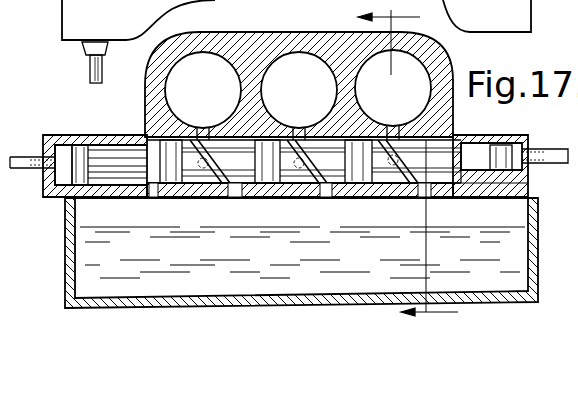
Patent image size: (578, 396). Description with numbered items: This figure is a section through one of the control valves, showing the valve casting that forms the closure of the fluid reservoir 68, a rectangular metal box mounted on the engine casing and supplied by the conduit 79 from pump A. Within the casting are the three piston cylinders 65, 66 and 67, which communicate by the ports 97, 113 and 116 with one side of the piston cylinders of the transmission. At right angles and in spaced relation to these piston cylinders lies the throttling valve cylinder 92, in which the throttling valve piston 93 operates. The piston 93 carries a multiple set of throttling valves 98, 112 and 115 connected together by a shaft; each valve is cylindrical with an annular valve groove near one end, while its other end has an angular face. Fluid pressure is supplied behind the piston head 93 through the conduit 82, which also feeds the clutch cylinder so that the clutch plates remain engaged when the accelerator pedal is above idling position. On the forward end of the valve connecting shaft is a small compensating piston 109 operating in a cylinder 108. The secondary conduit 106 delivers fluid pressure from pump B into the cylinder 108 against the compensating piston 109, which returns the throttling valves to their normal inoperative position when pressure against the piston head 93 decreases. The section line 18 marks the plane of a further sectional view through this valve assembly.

The section line 18- 18 is at (408, 168).
The piston cylinder 65 is at (393, 88).
The piston cylinder 66 is at (299, 90).
The piston cylinder 67 is at (203, 90).
The fluid reservoir 68 is at (532, 208).
The conduit 79 is at (102, 62).
The conduit 82 is at (32, 159).
The throttling valve cylinder 92 is at (63, 148).
The throttling valve piston 93 is at (82, 152).
The port 97 is at (393, 137).
The throttling valve 98 is at (372, 183).
The conduit 106 is at (551, 156).
The cylinder 108 is at (505, 146).
The compensating piston 109 is at (468, 185).
The throttling valve 112 is at (262, 183).
The port 113 is at (299, 137).
The throttling valve 115 is at (180, 183).
The port 116 is at (202, 137).